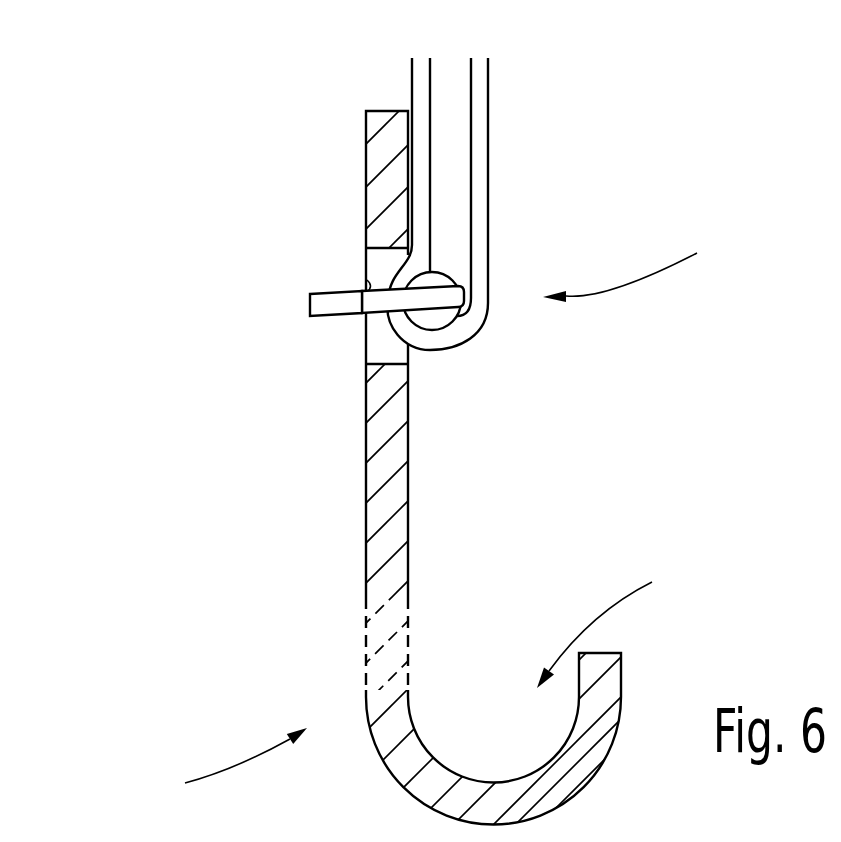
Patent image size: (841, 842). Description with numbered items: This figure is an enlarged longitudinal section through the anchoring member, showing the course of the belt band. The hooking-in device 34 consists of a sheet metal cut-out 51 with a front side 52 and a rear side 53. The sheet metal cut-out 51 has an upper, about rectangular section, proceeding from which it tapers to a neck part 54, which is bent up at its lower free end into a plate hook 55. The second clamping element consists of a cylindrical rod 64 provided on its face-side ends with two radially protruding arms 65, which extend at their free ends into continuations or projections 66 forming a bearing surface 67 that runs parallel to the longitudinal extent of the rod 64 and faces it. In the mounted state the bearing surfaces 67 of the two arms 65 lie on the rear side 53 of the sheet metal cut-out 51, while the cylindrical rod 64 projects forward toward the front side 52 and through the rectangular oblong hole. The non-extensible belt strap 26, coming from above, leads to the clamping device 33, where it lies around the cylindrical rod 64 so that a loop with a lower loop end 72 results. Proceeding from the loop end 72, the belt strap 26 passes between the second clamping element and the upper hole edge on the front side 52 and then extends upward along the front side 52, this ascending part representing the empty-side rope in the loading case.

The non-extensible belt strap 26 is at (478, 132).
The clamping device 33 is at (633, 267).
The hooking-in device 34 is at (229, 765).
The sheet metal cut-out 51 is at (370, 110).
The front side 52 is at (402, 405).
The rear side 53 is at (363, 392).
The neck part 54 is at (407, 583).
The plate hook 55 is at (612, 624).
The cylindrical rod 64 is at (442, 268).
The radially protruding arms 65 is at (422, 295).
The continuations or projections 66 is at (308, 302).
The bearing surface 67 is at (373, 276).
The loop end 72 is at (420, 338).